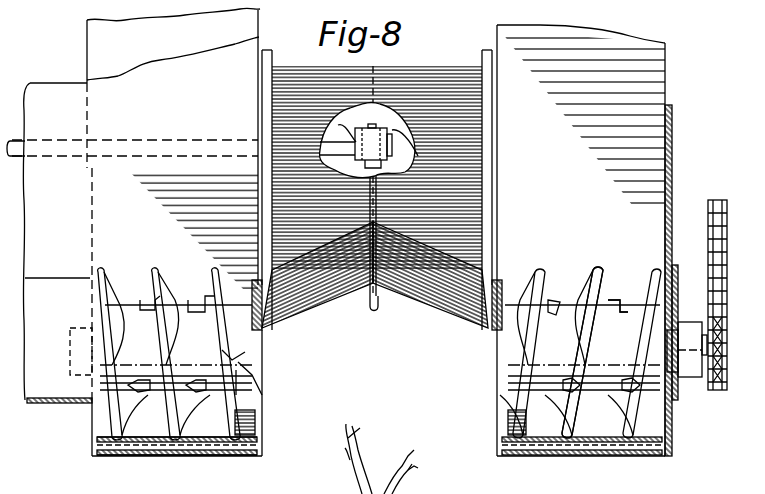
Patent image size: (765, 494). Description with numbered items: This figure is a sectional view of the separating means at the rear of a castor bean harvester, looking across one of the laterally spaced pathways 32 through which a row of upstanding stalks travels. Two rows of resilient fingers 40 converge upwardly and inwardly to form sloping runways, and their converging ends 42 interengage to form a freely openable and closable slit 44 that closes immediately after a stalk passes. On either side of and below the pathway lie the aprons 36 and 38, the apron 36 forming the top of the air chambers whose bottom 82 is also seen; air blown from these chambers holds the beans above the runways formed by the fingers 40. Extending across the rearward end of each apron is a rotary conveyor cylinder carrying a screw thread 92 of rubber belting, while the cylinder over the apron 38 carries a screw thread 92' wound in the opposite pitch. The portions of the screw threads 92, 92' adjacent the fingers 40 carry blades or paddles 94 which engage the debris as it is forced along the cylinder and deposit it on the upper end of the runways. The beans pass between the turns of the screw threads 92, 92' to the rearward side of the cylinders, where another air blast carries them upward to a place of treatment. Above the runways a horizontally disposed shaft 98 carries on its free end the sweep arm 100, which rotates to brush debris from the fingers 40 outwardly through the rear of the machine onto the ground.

The pathway 32 is at (396, 386).
The apron 36 is at (150, 432).
The apron 38 is at (520, 432).
The resilient fingers 40 is at (427, 312).
The converging ends of the fingers 42 is at (382, 300).
The slit 44 is at (373, 459).
The bottom 82 is at (206, 456).
The screw thread 92 is at (171, 320).
The screw thread 92' is at (629, 277).
The blades or paddles 94 is at (264, 390).
The horizontally disposed shaft 98 is at (367, 140).
The sweep arm 100 is at (418, 156).